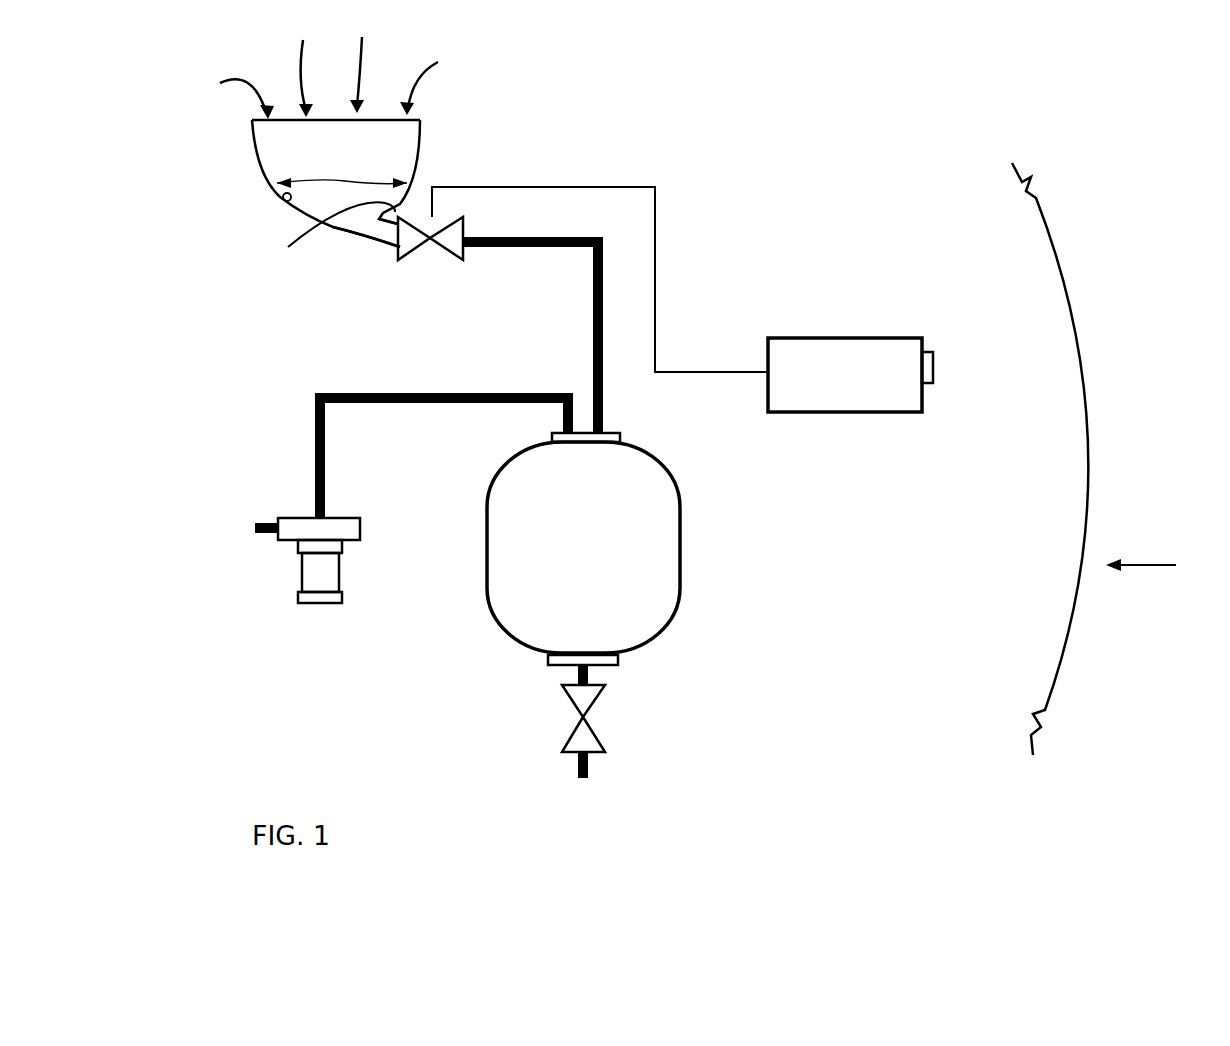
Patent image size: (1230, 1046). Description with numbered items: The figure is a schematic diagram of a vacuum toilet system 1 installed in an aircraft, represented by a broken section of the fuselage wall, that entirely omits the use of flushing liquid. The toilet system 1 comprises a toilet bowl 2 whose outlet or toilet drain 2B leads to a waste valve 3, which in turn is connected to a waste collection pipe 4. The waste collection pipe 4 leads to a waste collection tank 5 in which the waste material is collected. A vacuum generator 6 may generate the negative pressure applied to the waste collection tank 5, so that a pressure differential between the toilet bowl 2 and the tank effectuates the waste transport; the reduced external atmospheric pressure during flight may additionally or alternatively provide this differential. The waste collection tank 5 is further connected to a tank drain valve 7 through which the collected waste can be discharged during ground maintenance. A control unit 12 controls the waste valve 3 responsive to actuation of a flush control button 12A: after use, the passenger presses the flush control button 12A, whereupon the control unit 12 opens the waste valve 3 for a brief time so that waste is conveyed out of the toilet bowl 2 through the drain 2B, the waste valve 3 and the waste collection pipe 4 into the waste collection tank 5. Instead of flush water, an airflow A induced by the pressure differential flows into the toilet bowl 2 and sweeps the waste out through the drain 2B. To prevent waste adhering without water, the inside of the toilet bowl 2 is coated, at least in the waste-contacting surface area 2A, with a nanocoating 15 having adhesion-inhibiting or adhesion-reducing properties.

The toilet system 1 is at (760, 165).
The toilet bowl 2 is at (312, 202).
The waste-contacting surface area 2A is at (342, 164).
The toilet drain 2B is at (377, 230).
The nanocoating 15 is at (283, 197).
The waste valve 3 is at (450, 242).
The waste collection pipe 4 is at (512, 248).
The waste collection tank 5 is at (589, 569).
The vacuum generator 6 is at (312, 580).
The tank drain valve 7 is at (588, 738).
The control unit 12 is at (898, 360).
The flush control button 12A is at (933, 365).
The airflow A is at (228, 84).